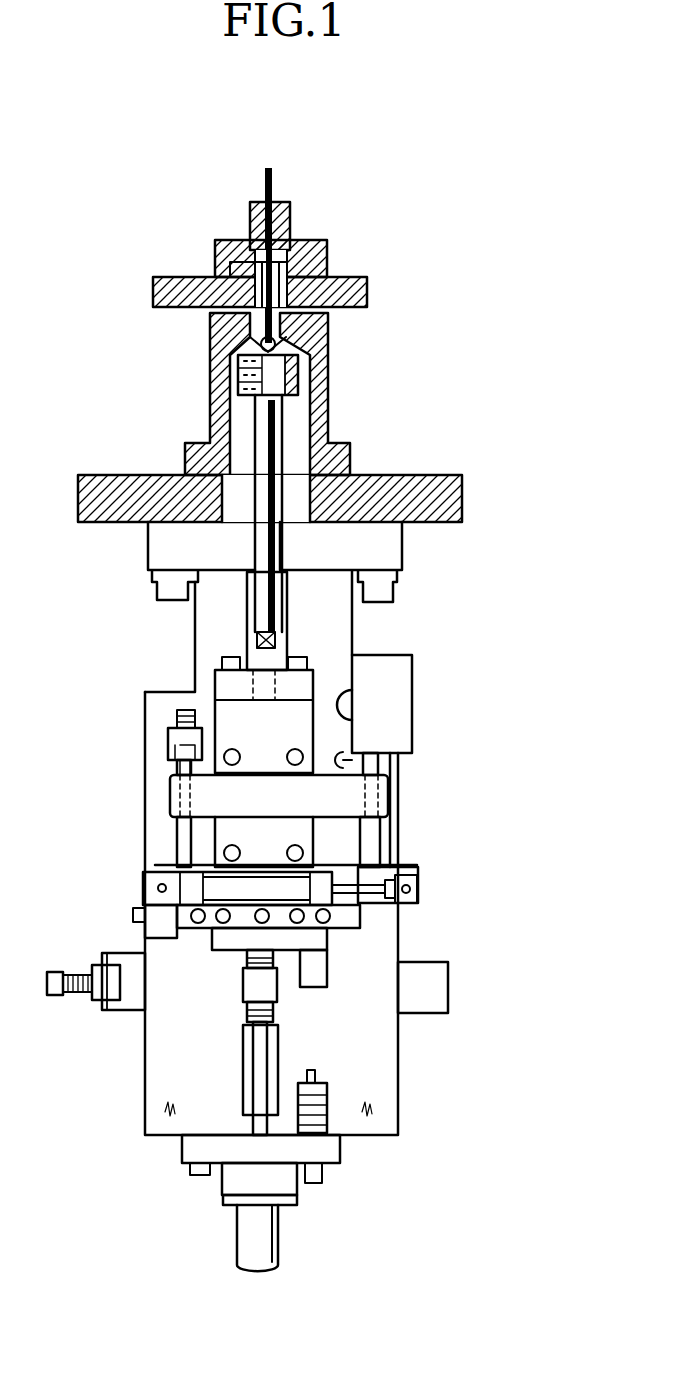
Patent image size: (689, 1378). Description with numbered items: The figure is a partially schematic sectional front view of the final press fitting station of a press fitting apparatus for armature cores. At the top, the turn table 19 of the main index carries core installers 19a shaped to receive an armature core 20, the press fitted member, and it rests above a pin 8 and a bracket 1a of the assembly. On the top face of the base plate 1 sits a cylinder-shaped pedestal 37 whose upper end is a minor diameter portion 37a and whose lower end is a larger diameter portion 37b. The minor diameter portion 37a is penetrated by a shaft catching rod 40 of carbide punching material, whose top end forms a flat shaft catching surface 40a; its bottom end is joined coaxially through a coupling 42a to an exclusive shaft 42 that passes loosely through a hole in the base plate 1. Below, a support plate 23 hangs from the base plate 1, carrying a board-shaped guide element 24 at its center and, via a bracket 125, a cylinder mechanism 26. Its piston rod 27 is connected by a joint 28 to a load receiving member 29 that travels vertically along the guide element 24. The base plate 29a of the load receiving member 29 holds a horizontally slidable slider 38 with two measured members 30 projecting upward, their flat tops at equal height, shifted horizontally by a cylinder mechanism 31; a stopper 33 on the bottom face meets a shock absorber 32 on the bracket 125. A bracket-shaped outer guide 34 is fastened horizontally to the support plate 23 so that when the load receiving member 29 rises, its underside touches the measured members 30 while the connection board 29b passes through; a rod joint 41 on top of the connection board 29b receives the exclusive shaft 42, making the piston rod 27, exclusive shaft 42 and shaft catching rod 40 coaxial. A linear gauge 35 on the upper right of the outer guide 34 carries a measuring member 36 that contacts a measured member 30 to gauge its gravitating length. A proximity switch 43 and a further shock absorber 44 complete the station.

The base plate 1 is at (438, 484).
The bracket 1a is at (293, 524).
The pin 8 is at (267, 182).
The turn table 19 is at (367, 295).
The core installer 19a is at (318, 252).
The armature core 20 is at (290, 208).
The support plate 23 is at (160, 1054).
The guide element 24 is at (247, 610).
The cylinder mechanism 26 is at (263, 1228).
The piston rod 27 is at (330, 1057).
The joint 28 is at (252, 985).
The load receiving member 29 is at (238, 938).
The base plate of the load receiving member 29a is at (350, 914).
The connection board 29b is at (230, 720).
The measured member 30 is at (182, 842).
The cylinder mechanism 31 is at (280, 895).
The shock absorber 32 is at (323, 1092).
The stopper 33 is at (330, 970).
The outer guide 34 is at (207, 788).
The linear gauge 35 is at (395, 712).
The measuring member 36 is at (402, 777).
The pedestal 37 is at (320, 402).
The minor diameter portion 37a is at (292, 324).
The larger diameter portion 37b is at (232, 425).
The slider 38 is at (412, 884).
The shaft catching rod 40 is at (215, 292).
The shaft catching surface 40a is at (262, 296).
The rod joint 41 is at (230, 686).
The exclusive shaft 42 is at (258, 545).
The coupling 42a is at (295, 378).
The proximity switch 43 is at (118, 955).
The shock absorber 44 is at (178, 740).
The bracket 125 is at (192, 1147).